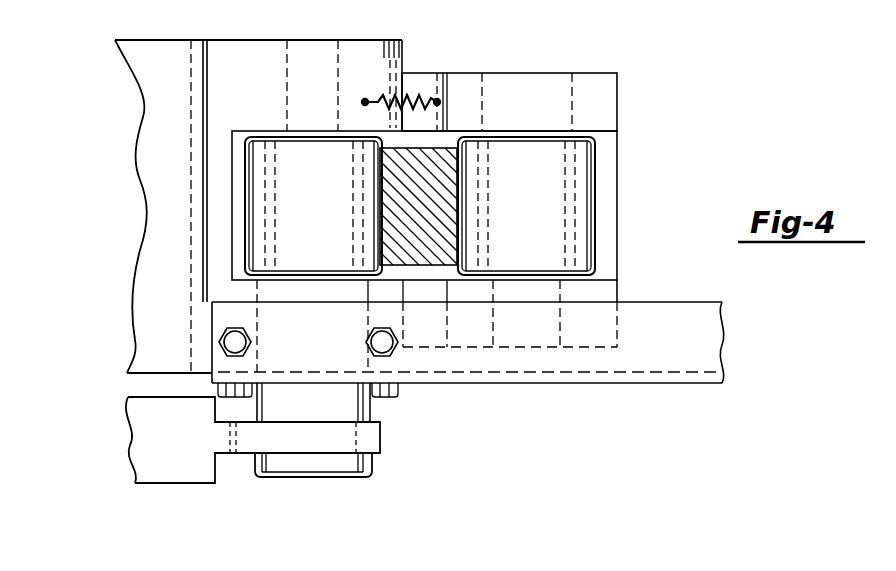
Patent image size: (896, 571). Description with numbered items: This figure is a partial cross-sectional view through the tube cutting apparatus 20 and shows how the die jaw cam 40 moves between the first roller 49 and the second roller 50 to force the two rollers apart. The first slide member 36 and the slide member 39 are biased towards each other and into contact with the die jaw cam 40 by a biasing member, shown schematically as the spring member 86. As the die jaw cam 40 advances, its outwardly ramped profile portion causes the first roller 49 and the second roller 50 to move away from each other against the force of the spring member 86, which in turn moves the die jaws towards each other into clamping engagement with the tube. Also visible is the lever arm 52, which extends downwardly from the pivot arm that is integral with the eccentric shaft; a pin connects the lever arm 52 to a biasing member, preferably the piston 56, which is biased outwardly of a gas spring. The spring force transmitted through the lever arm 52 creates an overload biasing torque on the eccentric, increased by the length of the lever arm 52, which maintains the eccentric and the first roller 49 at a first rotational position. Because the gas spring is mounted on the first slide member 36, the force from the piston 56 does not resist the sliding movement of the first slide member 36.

The tube cutting apparatus 20 is at (655, 125).
The first slide member 36 is at (150, 70).
The slide member 39 is at (607, 95).
The die jaw cam 40 is at (455, 147).
The first roller 49 is at (255, 203).
The second roller 50 is at (585, 210).
The lever arm 52 is at (372, 402).
The piston 56 is at (152, 413).
The spring member 86 is at (416, 99).